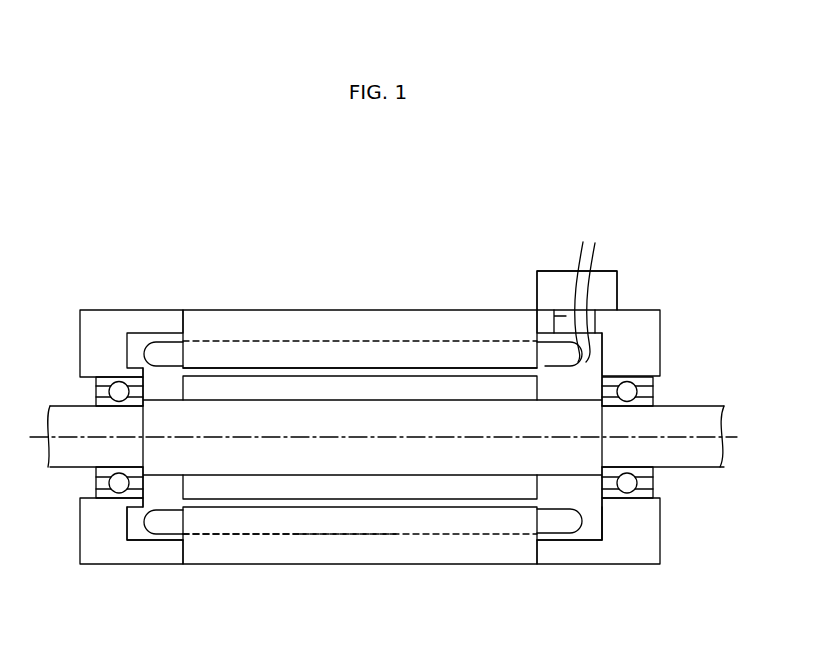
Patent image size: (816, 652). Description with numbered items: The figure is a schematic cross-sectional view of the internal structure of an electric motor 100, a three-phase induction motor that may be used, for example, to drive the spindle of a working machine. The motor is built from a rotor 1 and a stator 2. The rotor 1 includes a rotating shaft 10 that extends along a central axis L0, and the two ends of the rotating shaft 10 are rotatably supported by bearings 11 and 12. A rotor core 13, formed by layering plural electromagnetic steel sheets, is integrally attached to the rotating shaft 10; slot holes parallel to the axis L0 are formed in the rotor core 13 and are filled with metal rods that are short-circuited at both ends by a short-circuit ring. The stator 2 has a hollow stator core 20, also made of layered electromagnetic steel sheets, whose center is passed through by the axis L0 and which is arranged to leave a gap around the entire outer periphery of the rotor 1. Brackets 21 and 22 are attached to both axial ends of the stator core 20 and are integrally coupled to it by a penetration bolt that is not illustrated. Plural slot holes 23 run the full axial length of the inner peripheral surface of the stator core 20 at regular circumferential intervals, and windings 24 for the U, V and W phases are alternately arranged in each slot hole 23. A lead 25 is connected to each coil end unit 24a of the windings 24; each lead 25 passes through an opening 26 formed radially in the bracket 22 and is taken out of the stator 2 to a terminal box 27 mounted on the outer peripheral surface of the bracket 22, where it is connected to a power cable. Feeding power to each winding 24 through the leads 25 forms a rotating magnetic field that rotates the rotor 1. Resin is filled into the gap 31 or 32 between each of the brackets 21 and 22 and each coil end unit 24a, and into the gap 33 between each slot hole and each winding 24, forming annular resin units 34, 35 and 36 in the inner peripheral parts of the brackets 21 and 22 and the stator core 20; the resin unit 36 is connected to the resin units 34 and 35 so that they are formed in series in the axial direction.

The electric motor 100 is at (631, 220).
The rotor 1 is at (207, 370).
The stator 2 is at (322, 303).
The rotating shaft 10 is at (708, 405).
The bearing 11 is at (88, 480).
The bearing 12 is at (650, 481).
The rotor core 13 is at (452, 488).
The stator core 20 is at (438, 325).
The bracket 21 is at (107, 310).
The bracket 22 is at (660, 320).
The slot hole 23 is at (290, 345).
The winding 24 is at (368, 355).
The coil end unit 24a is at (568, 370).
The lead 25 is at (598, 250).
The opening 26 is at (562, 312).
The terminal box 27 is at (617, 292).
The gap 31 is at (138, 537).
The gap 32 is at (575, 540).
The gap 33 is at (280, 520).
The resin unit 34 is at (159, 540).
The resin unit 35 is at (598, 540).
The resin unit 36 is at (350, 525).
The central axis L0 is at (397, 437).